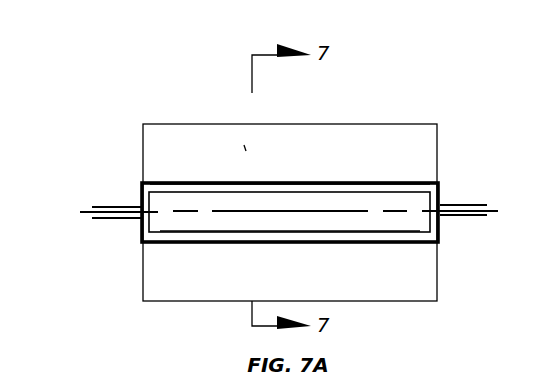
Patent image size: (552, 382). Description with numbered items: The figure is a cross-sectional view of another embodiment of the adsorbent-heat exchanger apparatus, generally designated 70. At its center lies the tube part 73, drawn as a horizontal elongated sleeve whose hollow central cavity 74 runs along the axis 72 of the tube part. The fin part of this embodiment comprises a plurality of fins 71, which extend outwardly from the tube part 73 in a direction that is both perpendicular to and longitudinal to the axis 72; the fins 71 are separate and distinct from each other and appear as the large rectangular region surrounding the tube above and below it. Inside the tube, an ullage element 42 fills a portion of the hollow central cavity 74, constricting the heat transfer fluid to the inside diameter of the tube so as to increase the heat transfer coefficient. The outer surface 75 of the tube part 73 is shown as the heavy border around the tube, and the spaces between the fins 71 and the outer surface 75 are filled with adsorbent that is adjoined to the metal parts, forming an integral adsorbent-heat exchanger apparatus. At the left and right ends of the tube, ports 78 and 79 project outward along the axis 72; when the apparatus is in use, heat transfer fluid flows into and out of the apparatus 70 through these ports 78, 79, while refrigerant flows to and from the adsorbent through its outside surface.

The adsorbent-heat exchanger apparatus 70 is at (213, 96).
The fins 71 is at (308, 140).
The axis 72 is at (355, 212).
The tube part 73 is at (230, 183).
The hollow central cavity 74 is at (397, 190).
The outer surface 75 is at (182, 183).
The port 78 is at (115, 205).
The port 79 is at (457, 218).
The ullage element 42 is at (384, 222).